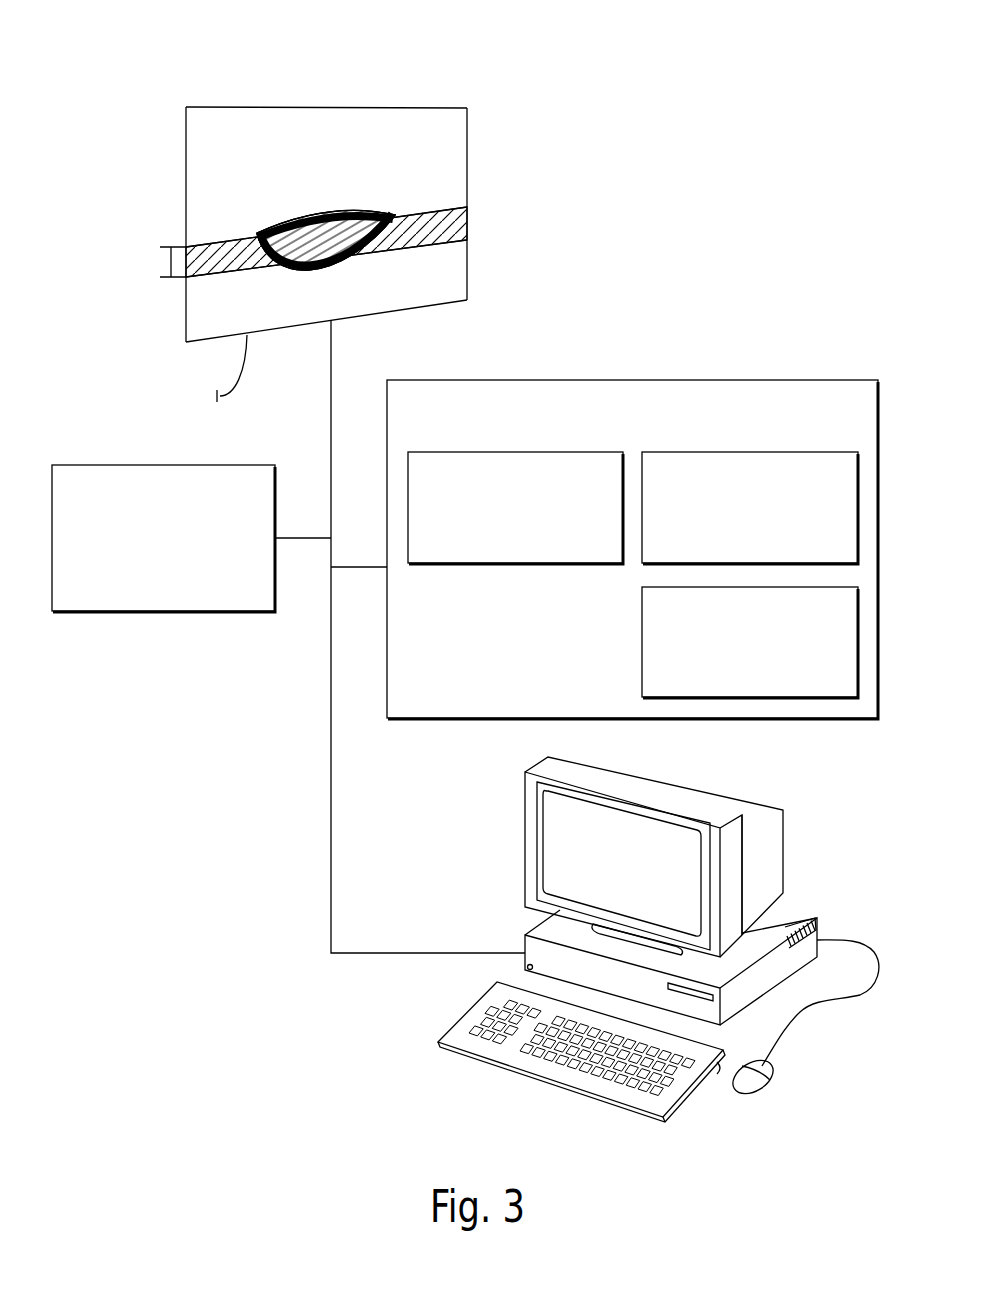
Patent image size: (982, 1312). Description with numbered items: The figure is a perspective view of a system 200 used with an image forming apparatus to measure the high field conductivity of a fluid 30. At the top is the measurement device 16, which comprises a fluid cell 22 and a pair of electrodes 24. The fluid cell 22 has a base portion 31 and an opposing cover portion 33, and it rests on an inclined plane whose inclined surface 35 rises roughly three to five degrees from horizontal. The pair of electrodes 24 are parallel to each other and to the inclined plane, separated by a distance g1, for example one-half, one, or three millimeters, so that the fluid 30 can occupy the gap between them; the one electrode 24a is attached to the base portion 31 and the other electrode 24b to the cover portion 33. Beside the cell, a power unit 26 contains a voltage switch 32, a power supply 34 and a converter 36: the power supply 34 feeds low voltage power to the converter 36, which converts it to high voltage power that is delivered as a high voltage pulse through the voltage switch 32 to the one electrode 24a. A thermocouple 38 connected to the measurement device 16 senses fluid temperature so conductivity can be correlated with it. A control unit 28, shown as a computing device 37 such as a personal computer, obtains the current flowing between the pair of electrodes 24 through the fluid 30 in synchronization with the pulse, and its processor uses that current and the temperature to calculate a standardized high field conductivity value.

The measurement device 16 is at (427, 77).
The system 200 is at (710, 126).
The fluid cell 22 is at (450, 177).
The cover portion 33 is at (297, 123).
The base portion 31 is at (433, 293).
The fluid 30 is at (467, 226).
The inclined surface 35 is at (220, 278).
The pair of electrodes 24 is at (258, 216).
The one electrode 24a is at (328, 270).
The other electrode 24b is at (326, 214).
The distance g1 is at (163, 261).
The thermocouple 38 is at (151, 535).
The power unit 26 is at (620, 420).
The voltage switch 32 is at (503, 496).
The power supply 34 is at (736, 496).
The converter 36 is at (736, 628).
The computing device 37 is at (525, 843).
The control unit 28 is at (650, 939).